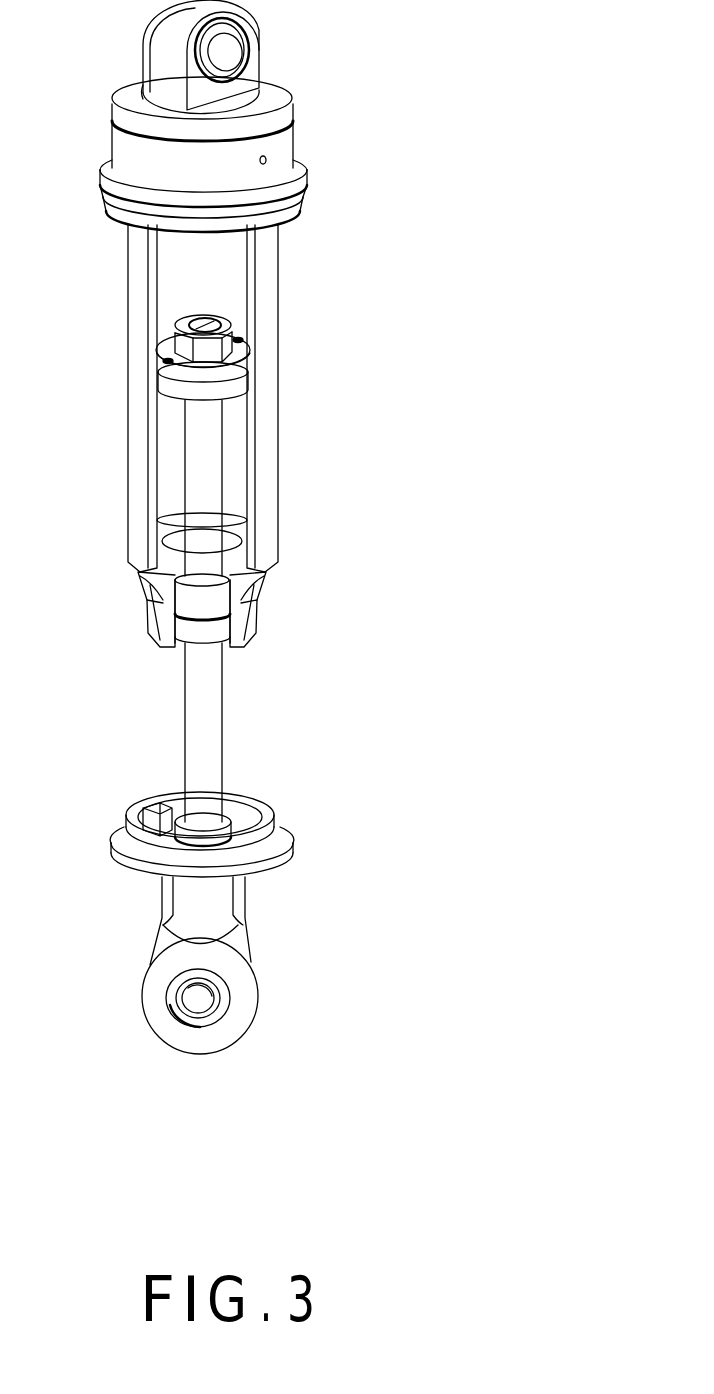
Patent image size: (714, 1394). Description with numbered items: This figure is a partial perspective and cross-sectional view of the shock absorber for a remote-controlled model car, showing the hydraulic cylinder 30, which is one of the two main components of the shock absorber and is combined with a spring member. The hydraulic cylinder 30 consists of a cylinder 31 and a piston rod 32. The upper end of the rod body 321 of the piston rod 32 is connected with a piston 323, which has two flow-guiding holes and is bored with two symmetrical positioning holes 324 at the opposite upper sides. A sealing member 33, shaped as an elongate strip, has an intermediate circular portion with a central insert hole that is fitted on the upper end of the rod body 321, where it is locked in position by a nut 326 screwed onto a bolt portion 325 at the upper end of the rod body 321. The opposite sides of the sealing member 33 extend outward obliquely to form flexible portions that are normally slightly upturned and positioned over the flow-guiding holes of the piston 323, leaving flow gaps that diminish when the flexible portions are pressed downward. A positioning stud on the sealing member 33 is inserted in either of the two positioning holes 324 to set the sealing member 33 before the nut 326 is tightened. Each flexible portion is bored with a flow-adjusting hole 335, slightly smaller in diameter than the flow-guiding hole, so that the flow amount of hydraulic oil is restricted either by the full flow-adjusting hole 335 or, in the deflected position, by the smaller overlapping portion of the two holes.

The hydraulic cylinder 30 is at (289, 264).
The cylinder 31 is at (268, 355).
The piston rod 32 is at (225, 727).
The rod body 321 is at (207, 765).
The piston 323 is at (246, 398).
The positioning holes 324 is at (250, 372).
The bolt portion 325 is at (212, 320).
The nut 326 is at (231, 308).
The sealing member 33 is at (141, 387).
The flow-adjusting hole 335 is at (162, 372).